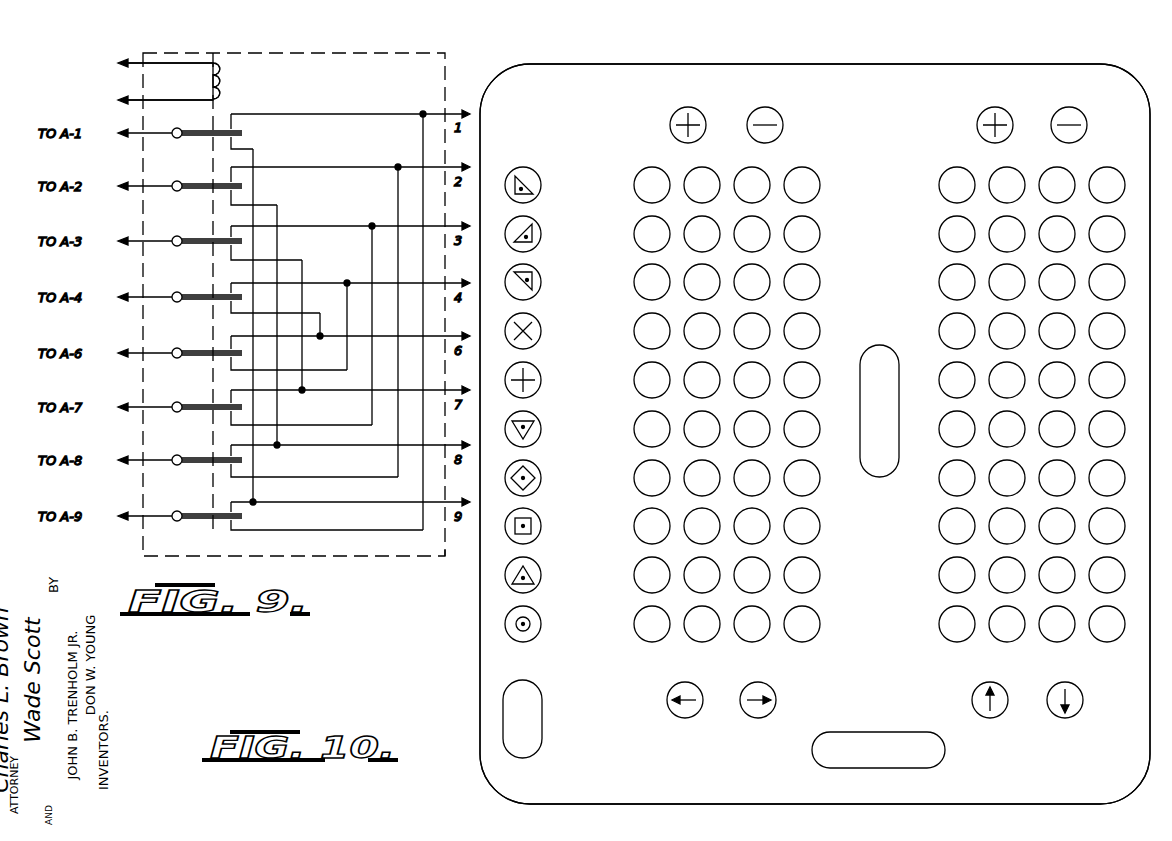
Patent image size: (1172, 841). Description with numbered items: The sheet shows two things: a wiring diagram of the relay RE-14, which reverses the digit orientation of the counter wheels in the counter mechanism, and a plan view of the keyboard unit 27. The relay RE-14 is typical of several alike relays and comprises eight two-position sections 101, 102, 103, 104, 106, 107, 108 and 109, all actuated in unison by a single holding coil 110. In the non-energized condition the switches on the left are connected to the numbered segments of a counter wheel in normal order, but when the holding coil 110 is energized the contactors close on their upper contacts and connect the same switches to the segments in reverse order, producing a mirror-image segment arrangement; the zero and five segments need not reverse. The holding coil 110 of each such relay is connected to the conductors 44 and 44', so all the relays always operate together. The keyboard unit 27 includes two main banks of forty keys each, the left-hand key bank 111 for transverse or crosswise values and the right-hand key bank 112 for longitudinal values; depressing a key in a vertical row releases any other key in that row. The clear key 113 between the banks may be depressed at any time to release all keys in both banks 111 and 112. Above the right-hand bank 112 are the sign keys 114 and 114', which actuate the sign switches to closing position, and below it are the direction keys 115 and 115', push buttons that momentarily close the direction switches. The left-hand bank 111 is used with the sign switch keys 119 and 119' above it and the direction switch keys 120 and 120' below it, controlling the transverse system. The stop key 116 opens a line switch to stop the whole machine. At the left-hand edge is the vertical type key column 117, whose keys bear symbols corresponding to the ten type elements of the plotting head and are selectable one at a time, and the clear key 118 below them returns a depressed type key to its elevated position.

In FIG. 9, the conductor 44 is at (154, 55).
In FIG. 9, the conductor 44' is at (154, 92).
In FIG. 9, the holding coil 110 is at (222, 78).
In FIG. 9, the two-position section 101 is at (199, 128).
In FIG. 9, the two-position section 102 is at (199, 181).
In FIG. 9, the two-position section 103 is at (199, 236).
In FIG. 9, the two-position section 104 is at (199, 292).
In FIG. 9, the two-position section 106 is at (199, 348).
In FIG. 9, the two-position section 107 is at (199, 402).
In FIG. 9, the two-position section 108 is at (199, 455).
In FIG. 9, the two-position section 109 is at (199, 511).
In FIG. 9, the relay RE-14 is at (392, 558).
In FIG. 10, the keyboard unit 27 is at (470, 656).
In FIG. 10, the left-hand key bank 111 is at (634, 646).
In FIG. 10, the right-hand key bank 112 is at (929, 648).
In FIG. 10, the clear key 113 is at (878, 477).
In FIG. 10, the sign key 114 is at (994, 111).
In FIG. 10, the sign key 114' is at (1069, 110).
In FIG. 10, the direction key 115 is at (992, 712).
In FIG. 10, the direction key 115' is at (1066, 713).
In FIG. 10, the stop key 116 is at (814, 760).
In FIG. 10, the type key column 117 is at (525, 164).
In FIG. 10, the clear key 118 is at (542, 738).
In FIG. 10, the sign switch key 119 is at (683, 114).
In FIG. 10, the sign switch key 119' is at (764, 110).
In FIG. 10, the direction switch key 120 is at (680, 711).
In FIG. 10, the direction switch key 120' is at (754, 711).